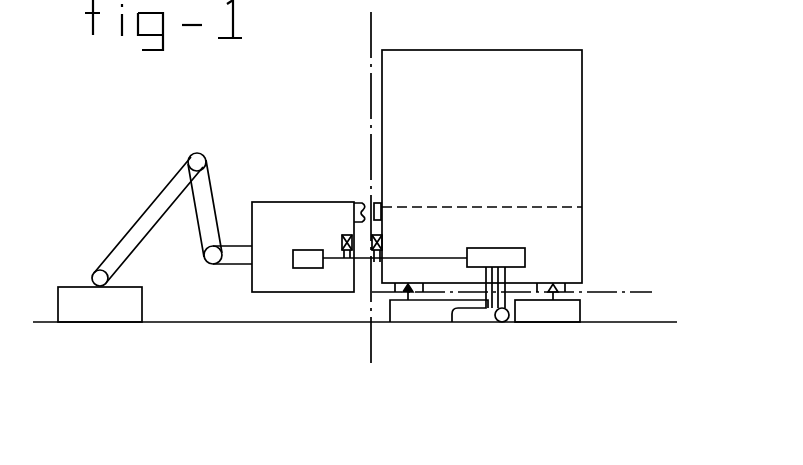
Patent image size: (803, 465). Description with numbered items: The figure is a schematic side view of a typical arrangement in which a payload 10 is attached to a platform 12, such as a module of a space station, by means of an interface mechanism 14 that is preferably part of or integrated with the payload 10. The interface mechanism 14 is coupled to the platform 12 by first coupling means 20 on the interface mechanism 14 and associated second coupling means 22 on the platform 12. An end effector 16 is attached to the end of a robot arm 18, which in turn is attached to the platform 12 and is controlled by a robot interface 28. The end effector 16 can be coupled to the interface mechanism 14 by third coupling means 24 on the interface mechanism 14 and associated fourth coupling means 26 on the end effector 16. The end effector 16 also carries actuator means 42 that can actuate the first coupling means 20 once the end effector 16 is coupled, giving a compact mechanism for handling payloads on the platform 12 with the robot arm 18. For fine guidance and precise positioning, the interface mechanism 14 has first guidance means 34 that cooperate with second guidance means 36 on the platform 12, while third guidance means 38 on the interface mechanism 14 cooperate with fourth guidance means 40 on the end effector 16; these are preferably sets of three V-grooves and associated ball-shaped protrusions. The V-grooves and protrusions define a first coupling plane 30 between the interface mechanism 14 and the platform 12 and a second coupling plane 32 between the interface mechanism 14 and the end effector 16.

The payload 10 is at (576, 78).
The platform 12 is at (647, 337).
The interface mechanism 14 is at (576, 228).
The end effector 16 is at (264, 210).
The robot arm 18 is at (150, 213).
The first coupling means 20 is at (478, 310).
The second coupling means 22 is at (423, 310).
The third coupling means 24 is at (370, 265).
The fourth coupling means 26 is at (346, 252).
The robot interface 28 is at (97, 312).
The first coupling plane 30 is at (637, 292).
The second coupling plane 32 is at (375, 343).
The first guidance means 34 is at (567, 283).
The second guidance means 36 is at (552, 300).
The third guidance means 38 is at (375, 200).
The fourth guidance means 40 is at (356, 204).
The actuator means 42 is at (302, 268).